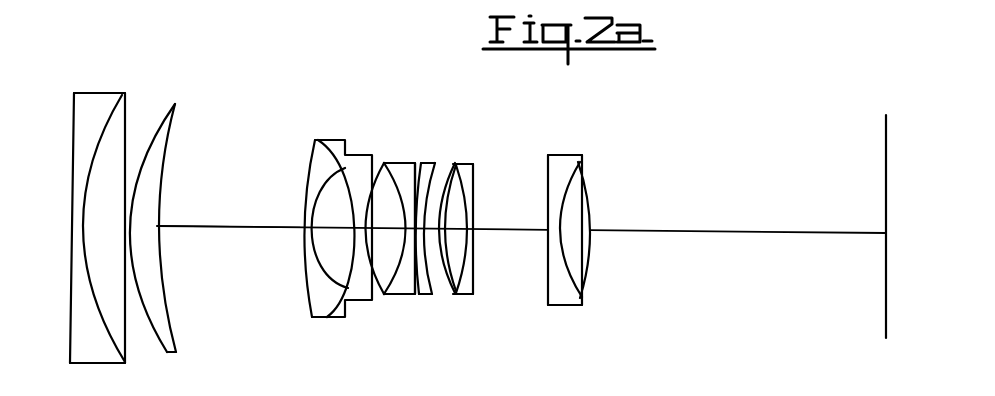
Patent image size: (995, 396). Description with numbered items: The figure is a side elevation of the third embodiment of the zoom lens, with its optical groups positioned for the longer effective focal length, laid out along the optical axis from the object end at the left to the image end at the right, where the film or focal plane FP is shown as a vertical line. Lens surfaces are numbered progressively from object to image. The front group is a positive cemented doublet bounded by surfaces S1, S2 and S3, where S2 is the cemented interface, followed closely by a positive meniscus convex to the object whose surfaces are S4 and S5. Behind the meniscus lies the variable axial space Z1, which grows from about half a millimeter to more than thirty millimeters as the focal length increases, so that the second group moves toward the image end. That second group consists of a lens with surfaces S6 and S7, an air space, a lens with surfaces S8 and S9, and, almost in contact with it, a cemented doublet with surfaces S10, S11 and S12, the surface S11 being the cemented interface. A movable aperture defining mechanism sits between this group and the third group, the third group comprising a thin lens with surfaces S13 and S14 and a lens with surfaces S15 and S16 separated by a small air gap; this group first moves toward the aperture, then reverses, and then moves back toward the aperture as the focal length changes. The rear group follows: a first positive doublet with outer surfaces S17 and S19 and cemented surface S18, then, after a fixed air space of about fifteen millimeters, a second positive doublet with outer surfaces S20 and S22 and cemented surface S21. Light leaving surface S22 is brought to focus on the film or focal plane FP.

The lens surface S1 is at (72, 125).
The lens surface S2 is at (92, 166).
The lens surface S3 is at (125, 103).
The lens surface S4 is at (157, 127).
The lens surface S5 is at (170, 150).
The lens surface S6 is at (307, 158).
The lens surface S7 is at (318, 139).
The lens surface S8 is at (327, 317).
The lens surface S9 is at (372, 175).
The lens surface S10 is at (391, 149).
The lens surface S11 is at (406, 162).
The lens surface S12 is at (425, 164).
The lens surface S13 is at (410, 291).
The lens surface S14 is at (430, 296).
The lens surface S15 is at (440, 292).
The lens surface S16 is at (441, 173).
The lens surface S17 is at (462, 164).
The lens surface S18 is at (465, 275).
The lens surface S19 is at (475, 206).
The lens surface S20 is at (548, 287).
The lens surface S21 is at (579, 166).
The lens surface S22 is at (590, 213).
The axial space Z1 is at (237, 228).
The film or focal plane FP is at (886, 198).